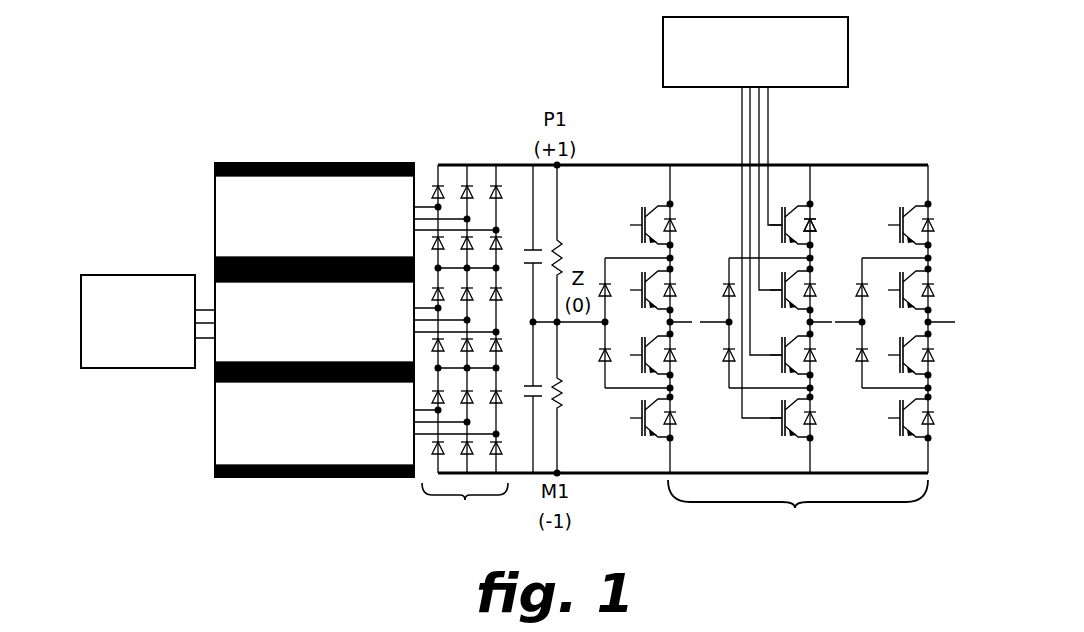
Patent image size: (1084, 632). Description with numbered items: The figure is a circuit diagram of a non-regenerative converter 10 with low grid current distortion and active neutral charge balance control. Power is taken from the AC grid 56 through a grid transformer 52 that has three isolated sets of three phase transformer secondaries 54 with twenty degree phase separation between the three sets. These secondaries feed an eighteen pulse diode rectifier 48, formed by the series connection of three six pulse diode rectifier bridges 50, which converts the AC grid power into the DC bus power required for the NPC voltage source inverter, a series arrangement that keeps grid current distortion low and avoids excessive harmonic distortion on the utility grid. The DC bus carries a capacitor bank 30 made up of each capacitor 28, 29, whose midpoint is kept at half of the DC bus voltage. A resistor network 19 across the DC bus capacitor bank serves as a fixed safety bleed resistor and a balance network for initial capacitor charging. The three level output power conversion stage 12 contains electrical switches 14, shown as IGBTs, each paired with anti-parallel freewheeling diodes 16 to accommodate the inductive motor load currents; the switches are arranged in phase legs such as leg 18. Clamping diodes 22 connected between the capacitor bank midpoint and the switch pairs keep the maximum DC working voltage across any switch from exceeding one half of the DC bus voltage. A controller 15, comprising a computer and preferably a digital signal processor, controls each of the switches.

The non-regenerative converter 10 is at (608, 72).
The three level output power conversion stage 12 is at (768, 328).
The electrical switches 14 is at (727, 204).
The controller 15 is at (755, 217).
The anti-parallel freewheeling diodes 16 is at (818, 222).
The inverter phase leg 18 is at (785, 289).
The resistor network 19 is at (574, 490).
The clamping diodes 22 is at (727, 284).
The capacitor 28 is at (531, 249).
The lower DC link capacitor 29 is at (533, 322).
The capacitor bank 30 is at (533, 494).
The eighteen pulse diode rectifier 48 is at (465, 508).
The six pulse diode rectifier bridges 50 is at (438, 148).
The grid transformer 52 is at (316, 163).
The three phase transformer secondaries 54 is at (215, 206).
The AC grid 56 is at (105, 276).